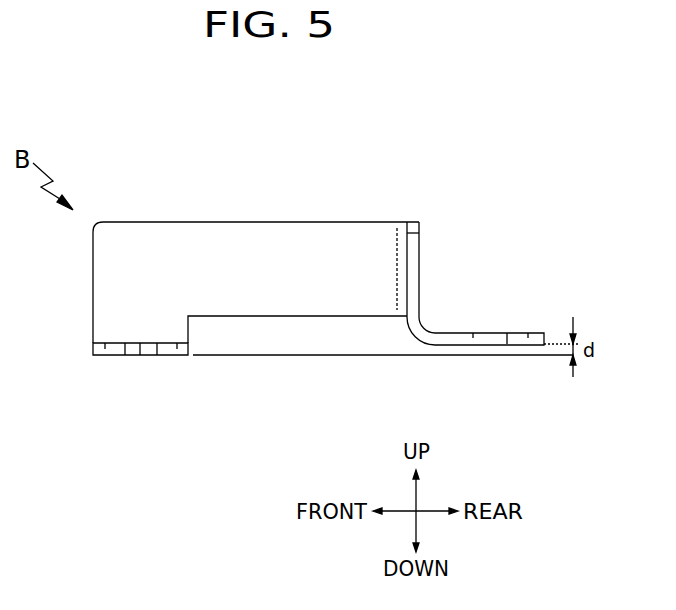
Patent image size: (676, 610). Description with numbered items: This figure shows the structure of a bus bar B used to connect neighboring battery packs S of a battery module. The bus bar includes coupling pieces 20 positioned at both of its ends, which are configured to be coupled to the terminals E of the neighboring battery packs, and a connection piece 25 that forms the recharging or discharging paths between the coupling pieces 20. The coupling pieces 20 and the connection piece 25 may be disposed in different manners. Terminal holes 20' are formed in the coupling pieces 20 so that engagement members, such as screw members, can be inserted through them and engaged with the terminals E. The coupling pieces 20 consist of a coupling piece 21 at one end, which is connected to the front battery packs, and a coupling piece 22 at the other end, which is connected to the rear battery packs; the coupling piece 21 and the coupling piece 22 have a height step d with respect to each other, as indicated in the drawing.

The coupling pieces 20 is at (321, 397).
The terminal holes 20' is at (149, 381).
The coupling piece of one end 21 is at (100, 349).
The coupling piece of the other end 22 is at (457, 333).
The connection piece 25 is at (265, 235).